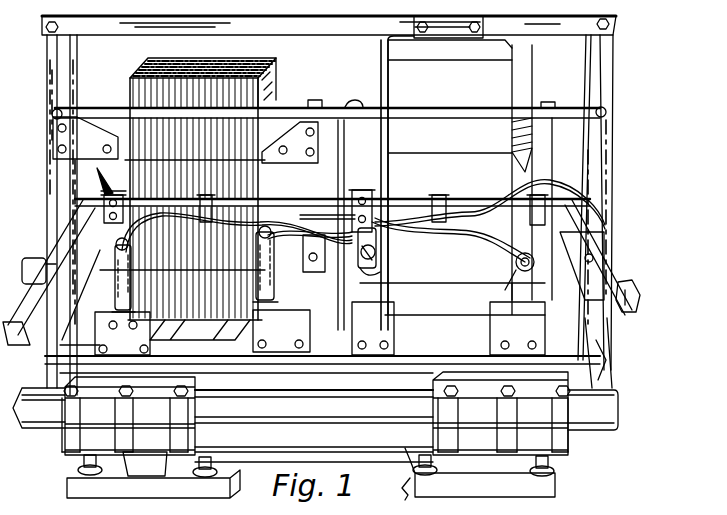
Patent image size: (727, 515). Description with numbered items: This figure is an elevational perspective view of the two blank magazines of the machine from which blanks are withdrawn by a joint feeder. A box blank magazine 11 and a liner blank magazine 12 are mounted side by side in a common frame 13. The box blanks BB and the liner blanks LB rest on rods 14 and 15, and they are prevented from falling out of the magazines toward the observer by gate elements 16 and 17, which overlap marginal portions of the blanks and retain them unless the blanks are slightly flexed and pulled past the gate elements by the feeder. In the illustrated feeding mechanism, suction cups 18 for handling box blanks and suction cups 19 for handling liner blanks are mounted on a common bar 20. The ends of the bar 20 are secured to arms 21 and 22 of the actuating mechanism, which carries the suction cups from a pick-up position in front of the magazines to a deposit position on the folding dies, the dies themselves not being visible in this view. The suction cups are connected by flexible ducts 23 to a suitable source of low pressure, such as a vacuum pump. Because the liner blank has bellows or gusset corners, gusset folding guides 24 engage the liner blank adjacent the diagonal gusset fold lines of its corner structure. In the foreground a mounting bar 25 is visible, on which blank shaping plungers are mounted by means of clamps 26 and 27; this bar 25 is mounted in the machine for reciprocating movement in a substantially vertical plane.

The box blank magazine 11 is at (520, 128).
The liner blank magazine 12 is at (283, 128).
The common frame 13 is at (535, 30).
The rod 14 is at (590, 274).
The rod 15 is at (196, 272).
The gate element 16 is at (548, 156).
The gate element 17 is at (108, 149).
The suction cup 18 is at (376, 250).
The suction cup 19 is at (132, 242).
The common bar 20 is at (318, 212).
The arm 21 is at (598, 225).
The arm 22 is at (70, 226).
The flexible duct 23 is at (478, 190).
The gusset folding guide 24 is at (106, 190).
The mounting bar 25 is at (322, 420).
The clamp 26 is at (484, 419).
The clamp 27 is at (154, 419).